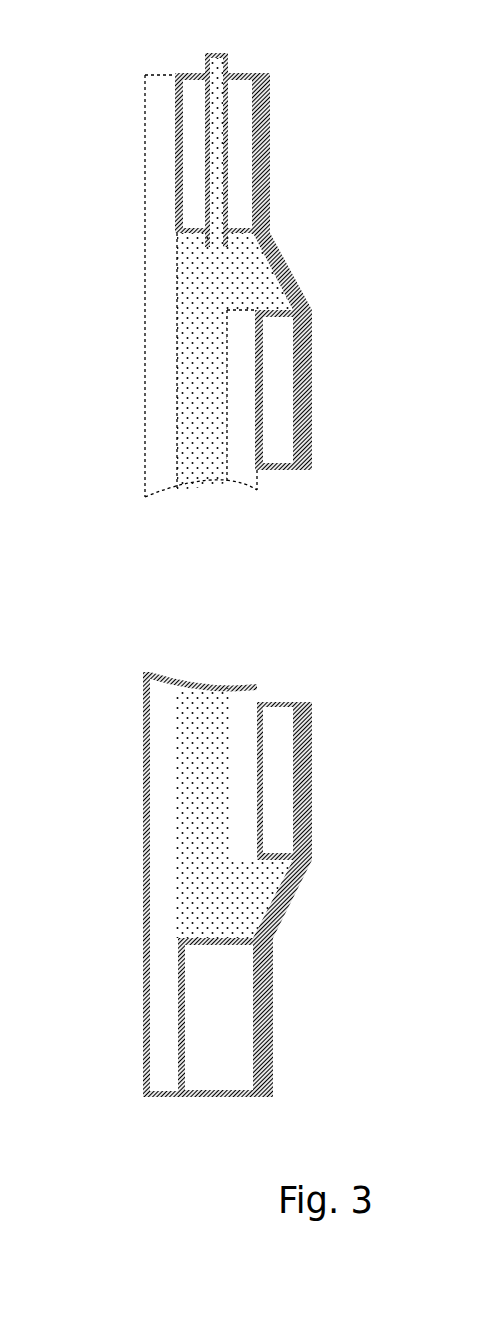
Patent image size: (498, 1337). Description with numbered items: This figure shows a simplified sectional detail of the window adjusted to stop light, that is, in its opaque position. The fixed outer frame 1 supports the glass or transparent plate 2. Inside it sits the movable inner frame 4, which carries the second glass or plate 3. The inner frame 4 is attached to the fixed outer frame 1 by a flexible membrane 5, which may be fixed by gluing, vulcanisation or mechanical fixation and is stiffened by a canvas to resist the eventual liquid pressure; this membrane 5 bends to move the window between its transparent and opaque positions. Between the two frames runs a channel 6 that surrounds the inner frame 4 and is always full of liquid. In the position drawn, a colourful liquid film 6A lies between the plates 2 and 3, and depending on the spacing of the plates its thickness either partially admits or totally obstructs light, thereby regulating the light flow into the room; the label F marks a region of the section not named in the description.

The cylindrical body / housing 1 is at (200, 73).
The casing 2 is at (167, 487).
The gap / interface region 3 is at (248, 480).
The annular box section 4 is at (280, 473).
The conical transition section 5 is at (287, 257).
The core material 6 is at (223, 282).
The core section 6A is at (198, 402).
The field / flow region F is at (100, 286).